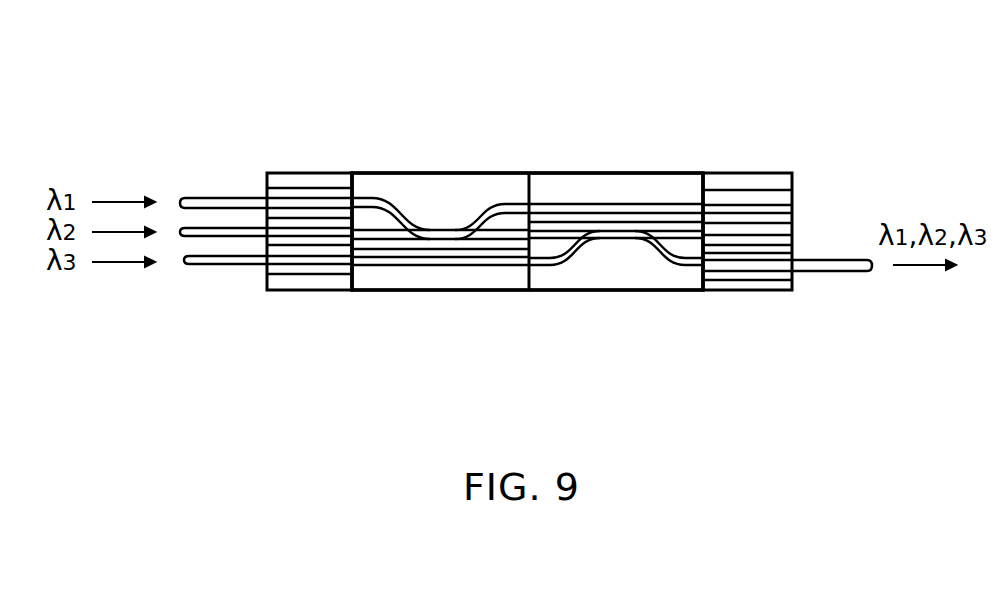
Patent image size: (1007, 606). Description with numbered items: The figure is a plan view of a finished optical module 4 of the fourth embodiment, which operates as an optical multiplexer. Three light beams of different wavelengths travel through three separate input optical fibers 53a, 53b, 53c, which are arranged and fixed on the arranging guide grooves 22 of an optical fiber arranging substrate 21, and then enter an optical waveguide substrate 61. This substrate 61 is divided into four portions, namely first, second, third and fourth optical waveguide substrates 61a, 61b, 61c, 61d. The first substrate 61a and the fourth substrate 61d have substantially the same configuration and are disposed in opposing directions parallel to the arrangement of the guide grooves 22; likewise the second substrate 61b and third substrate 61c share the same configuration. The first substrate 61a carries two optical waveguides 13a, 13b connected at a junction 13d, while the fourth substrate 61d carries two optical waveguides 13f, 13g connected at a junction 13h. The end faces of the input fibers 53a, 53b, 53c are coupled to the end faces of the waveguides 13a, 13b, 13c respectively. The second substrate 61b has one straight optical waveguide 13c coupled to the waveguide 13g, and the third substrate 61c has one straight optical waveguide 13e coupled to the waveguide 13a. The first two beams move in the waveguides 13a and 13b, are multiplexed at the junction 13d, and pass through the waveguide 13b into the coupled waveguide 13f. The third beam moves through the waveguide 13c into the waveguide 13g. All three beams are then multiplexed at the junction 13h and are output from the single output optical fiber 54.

The optical module 4 is at (572, 172).
The optical waveguide 13a is at (378, 197).
The optical waveguide 13b is at (488, 200).
The straight optical waveguide 13c is at (492, 262).
The junction 13d is at (432, 232).
The straight optical waveguide 13e is at (603, 203).
The optical waveguide 13f is at (675, 236).
The optical waveguide 13g is at (685, 264).
The junction 13h is at (611, 240).
The optical fiber arranging substrate 21 is at (289, 283).
The arranging guide grooves 22 is at (757, 207).
The input optical fiber 53a is at (213, 197).
The input optical fiber 53b is at (253, 227).
The input optical fiber 53c is at (213, 267).
The output optical fiber 54 is at (836, 273).
The optical waveguide substrate 61 is at (455, 172).
The first optical waveguide substrate 61a is at (369, 177).
The second optical waveguide substrate 61b is at (365, 283).
The third optical waveguide substrate 61c is at (551, 175).
The fourth optical waveguide substrate 61d is at (560, 283).